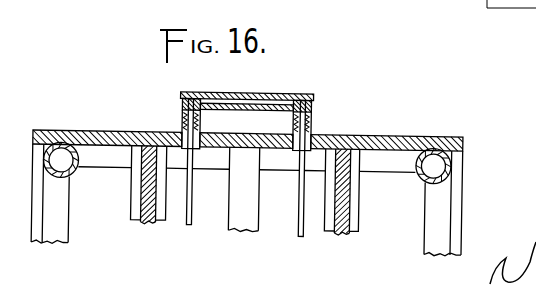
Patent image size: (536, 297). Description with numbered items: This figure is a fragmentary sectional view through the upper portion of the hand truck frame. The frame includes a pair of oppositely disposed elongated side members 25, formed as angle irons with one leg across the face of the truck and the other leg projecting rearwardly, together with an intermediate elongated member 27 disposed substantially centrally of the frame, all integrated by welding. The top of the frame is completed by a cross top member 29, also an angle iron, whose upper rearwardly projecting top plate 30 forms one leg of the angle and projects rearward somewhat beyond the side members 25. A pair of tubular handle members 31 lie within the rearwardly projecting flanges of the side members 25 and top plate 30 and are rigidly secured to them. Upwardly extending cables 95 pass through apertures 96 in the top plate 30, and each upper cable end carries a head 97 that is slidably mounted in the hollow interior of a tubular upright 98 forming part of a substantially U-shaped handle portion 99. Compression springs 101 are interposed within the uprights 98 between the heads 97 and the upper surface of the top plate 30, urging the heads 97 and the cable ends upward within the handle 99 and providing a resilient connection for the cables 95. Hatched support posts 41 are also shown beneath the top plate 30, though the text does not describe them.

The side members 25 is at (457, 190).
The intermediate elongated member 27 is at (247, 224).
The cross top member 29 is at (383, 166).
The top plate 30 is at (383, 132).
The handle members 31 is at (420, 171).
The support post 41 is at (340, 223).
The cables 95 is at (300, 194).
The apertures 96 is at (316, 134).
The head 97 is at (312, 96).
The tubular uprights 98 is at (313, 108).
The U-shaped handle portion 99 is at (292, 86).
The compression springs 101 is at (292, 114).